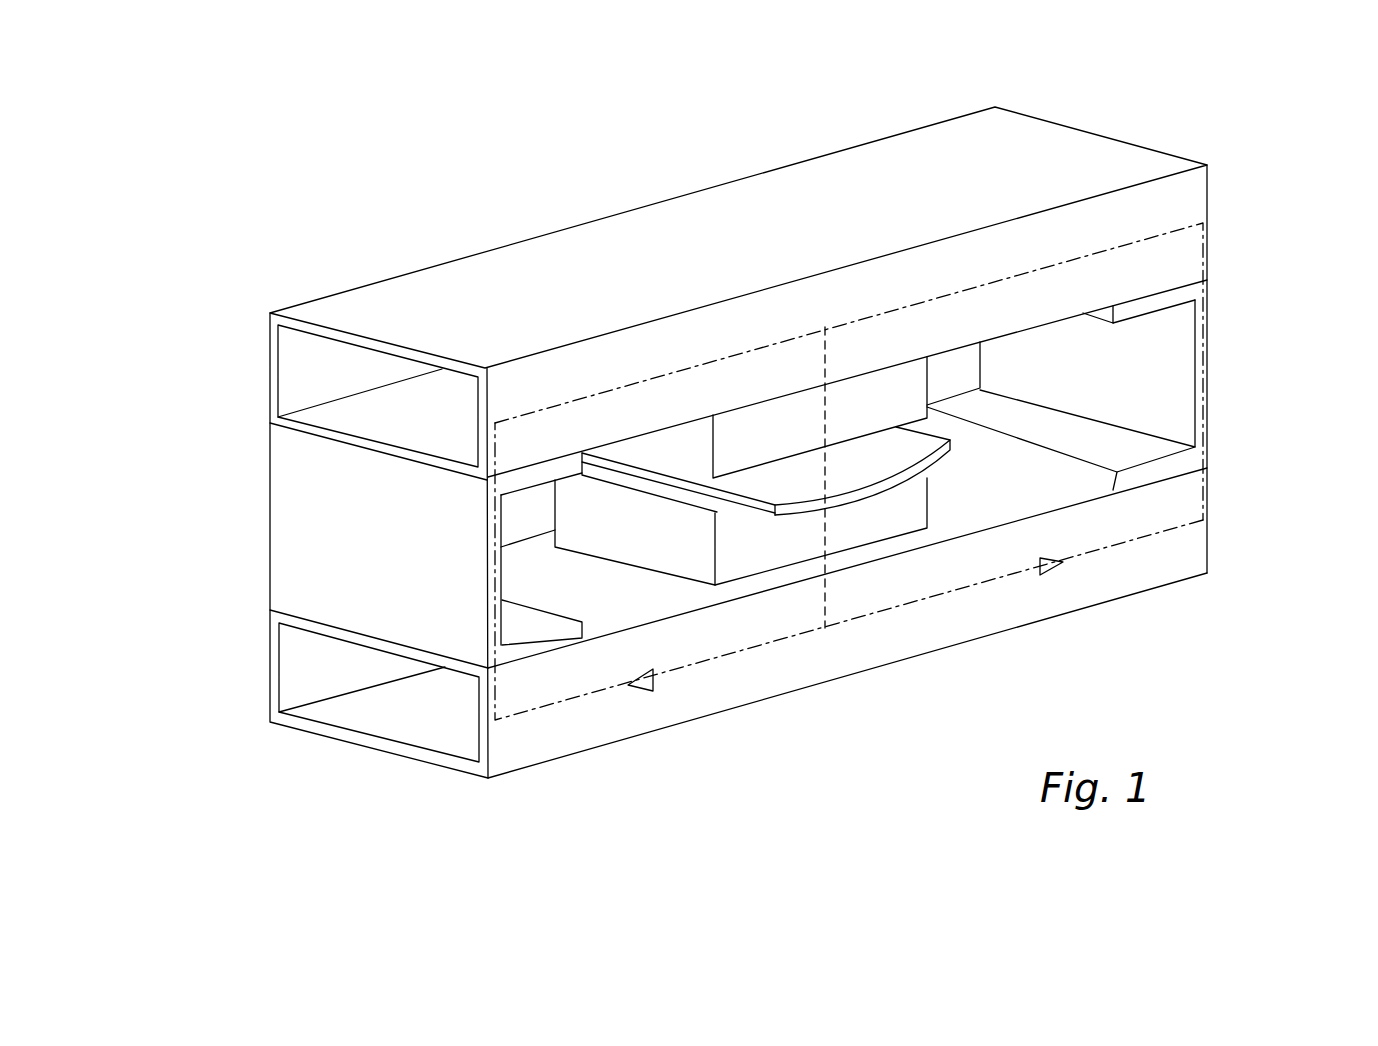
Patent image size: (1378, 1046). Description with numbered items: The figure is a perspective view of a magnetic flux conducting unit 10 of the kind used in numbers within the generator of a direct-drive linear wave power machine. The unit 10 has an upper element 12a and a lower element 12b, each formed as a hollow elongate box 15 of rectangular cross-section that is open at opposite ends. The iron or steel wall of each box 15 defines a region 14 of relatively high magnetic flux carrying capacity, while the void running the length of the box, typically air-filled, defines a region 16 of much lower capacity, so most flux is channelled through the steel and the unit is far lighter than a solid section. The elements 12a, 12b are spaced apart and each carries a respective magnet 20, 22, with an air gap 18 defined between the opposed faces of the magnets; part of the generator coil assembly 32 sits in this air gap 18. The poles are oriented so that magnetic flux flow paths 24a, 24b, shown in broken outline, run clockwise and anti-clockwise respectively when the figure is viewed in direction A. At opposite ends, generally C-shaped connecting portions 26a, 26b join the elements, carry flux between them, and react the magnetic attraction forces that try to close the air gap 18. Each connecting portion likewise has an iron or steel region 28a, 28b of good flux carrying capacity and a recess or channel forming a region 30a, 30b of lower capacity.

The magnetic flux conducting unit 10 is at (640, 118).
The upper element 12a is at (885, 170).
The lower element 12b is at (1065, 601).
The region of high magnetic flux carrying capacity 14 is at (295, 334).
The hollow elongate box 15 is at (565, 258).
The region of low magnetic flux carrying capacity 16 is at (440, 428).
The air gap 18 is at (696, 501).
The magnet 20 is at (768, 440).
The magnet 22 is at (841, 538).
The magnetic flux flow path 24a is at (745, 653).
The magnetic flux flow path 24b is at (925, 600).
The connecting portion 26a is at (306, 535).
The connecting portion 26b is at (1238, 283).
The region of high magnetic flux carrying capacity 28a is at (530, 645).
The region of high magnetic flux carrying capacity 28b is at (1172, 466).
The region of low magnetic flux carrying capacity 30a is at (512, 577).
The region of low magnetic flux carrying capacity 30b is at (1082, 393).
The coil assembly 32 is at (952, 456).
The viewing direction A is at (1238, 653).